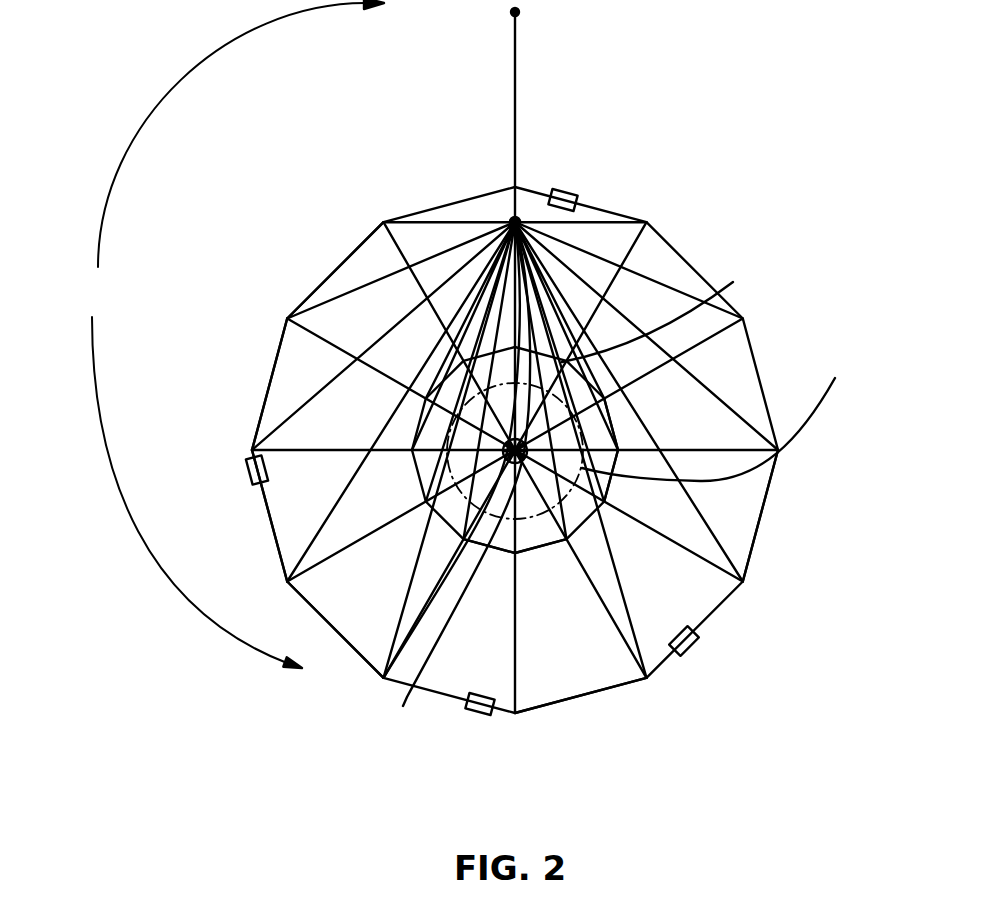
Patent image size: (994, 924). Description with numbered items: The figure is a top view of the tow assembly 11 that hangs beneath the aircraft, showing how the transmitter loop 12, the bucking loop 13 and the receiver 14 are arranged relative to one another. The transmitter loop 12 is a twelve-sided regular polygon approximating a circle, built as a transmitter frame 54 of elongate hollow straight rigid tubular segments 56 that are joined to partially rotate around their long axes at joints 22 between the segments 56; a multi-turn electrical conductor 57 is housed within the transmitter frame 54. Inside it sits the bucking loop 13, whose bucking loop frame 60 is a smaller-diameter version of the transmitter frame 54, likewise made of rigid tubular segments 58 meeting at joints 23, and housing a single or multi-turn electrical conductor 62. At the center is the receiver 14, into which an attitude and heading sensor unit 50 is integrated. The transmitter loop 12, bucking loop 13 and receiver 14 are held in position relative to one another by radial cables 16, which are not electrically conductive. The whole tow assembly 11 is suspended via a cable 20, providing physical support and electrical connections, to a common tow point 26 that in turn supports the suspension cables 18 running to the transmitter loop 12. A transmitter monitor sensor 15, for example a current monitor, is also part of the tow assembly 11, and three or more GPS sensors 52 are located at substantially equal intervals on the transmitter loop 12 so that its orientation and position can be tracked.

The tow assembly 11 is at (228, 334).
The transmitter loop 12 is at (763, 527).
The bucking loop 13 is at (532, 551).
The receiver 14 is at (420, 550).
The transmitter monitor sensor 15 is at (477, 716).
The radial cables 16 is at (694, 553).
The suspension cables 18 is at (717, 395).
The cable 20 is at (513, 104).
The joints 22 is at (747, 585).
The joints 23 is at (618, 450).
The common tow point 26 is at (511, 218).
The attitude and heading sensor unit 50 is at (657, 307).
The GPS sensors 52 is at (570, 192).
The transmitter frame 54 is at (610, 690).
The tubular segments 56 is at (322, 273).
The multi-turn electrical conductor 57 is at (275, 548).
The tubular segments 58 is at (445, 477).
The bucking loop frame 60 is at (421, 485).
The electrical conductor 62 is at (592, 490).